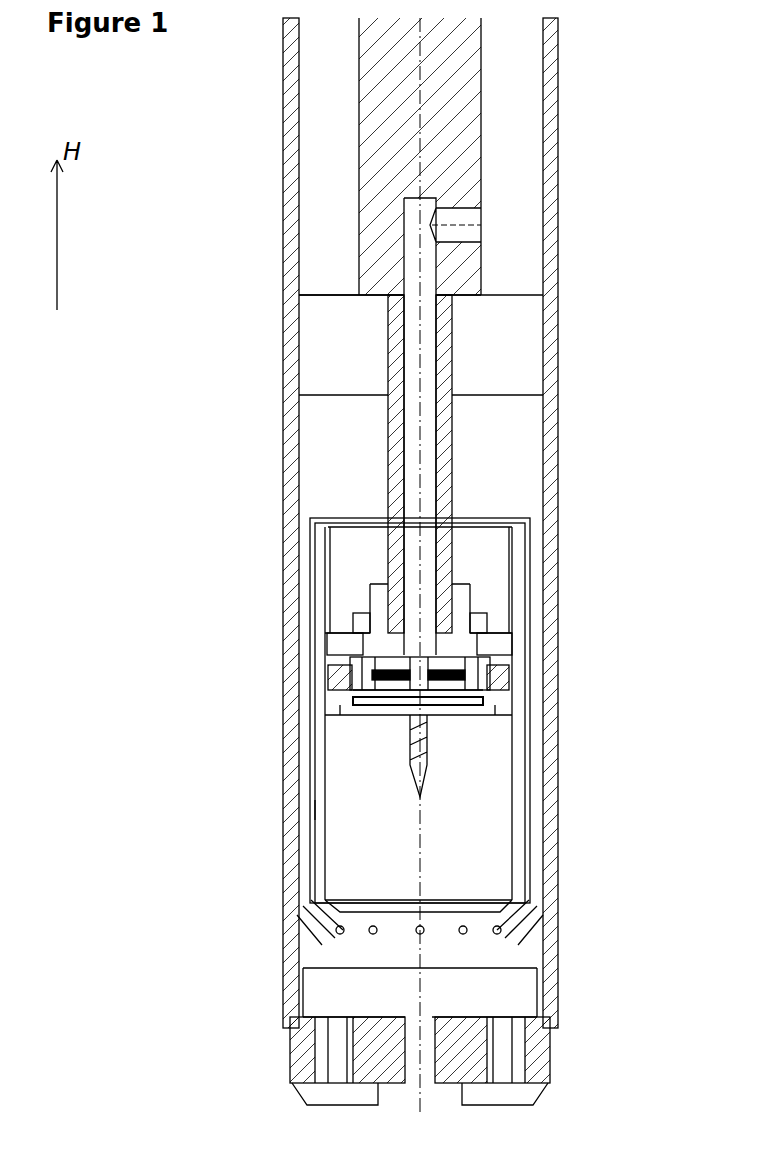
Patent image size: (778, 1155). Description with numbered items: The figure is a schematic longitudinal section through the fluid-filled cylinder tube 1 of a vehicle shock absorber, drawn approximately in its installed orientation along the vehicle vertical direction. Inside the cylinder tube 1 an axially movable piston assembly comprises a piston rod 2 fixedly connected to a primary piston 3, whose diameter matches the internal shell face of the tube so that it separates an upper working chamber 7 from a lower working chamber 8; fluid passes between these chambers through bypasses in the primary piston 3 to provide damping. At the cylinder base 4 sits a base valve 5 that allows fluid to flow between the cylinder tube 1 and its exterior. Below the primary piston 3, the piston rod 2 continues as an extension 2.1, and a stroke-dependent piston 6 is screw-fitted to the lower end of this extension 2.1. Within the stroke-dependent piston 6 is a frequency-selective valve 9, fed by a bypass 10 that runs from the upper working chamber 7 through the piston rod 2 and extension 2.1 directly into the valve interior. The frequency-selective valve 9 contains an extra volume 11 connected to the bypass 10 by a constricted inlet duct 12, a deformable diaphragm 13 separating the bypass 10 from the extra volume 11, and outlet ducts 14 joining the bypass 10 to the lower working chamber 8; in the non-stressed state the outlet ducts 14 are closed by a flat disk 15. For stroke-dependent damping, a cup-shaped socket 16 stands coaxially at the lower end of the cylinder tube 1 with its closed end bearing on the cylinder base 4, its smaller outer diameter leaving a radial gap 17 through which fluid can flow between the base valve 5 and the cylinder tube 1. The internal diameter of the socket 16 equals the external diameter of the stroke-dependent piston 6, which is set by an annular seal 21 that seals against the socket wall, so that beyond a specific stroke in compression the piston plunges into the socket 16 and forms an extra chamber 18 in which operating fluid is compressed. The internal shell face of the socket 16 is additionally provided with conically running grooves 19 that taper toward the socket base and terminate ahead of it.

The cylinder tube 1 is at (548, 130).
The piston rod 2 is at (367, 190).
The extension of the piston rod 2.1 is at (395, 480).
The primary piston 3 is at (316, 372).
The cylinder base 4 is at (527, 937).
The base valve 5 is at (413, 1015).
The stroke-dependent piston 6 is at (457, 650).
The upper working chamber 7 is at (317, 118).
The lower working chamber 8 is at (517, 478).
The frequency-selective valve 9 is at (395, 637).
The bypass 10 is at (418, 277).
The extra volume 11 is at (365, 730).
The inlet duct 12 is at (455, 618).
The diaphragm 13 is at (490, 672).
The outlet duct 14 is at (368, 655).
The flat disk 15 is at (488, 705).
The socket 16 is at (317, 810).
The gap 17 is at (533, 523).
The extra chamber 18 is at (477, 857).
The groove 19 is at (325, 563).
The annular seal 21 is at (355, 665).